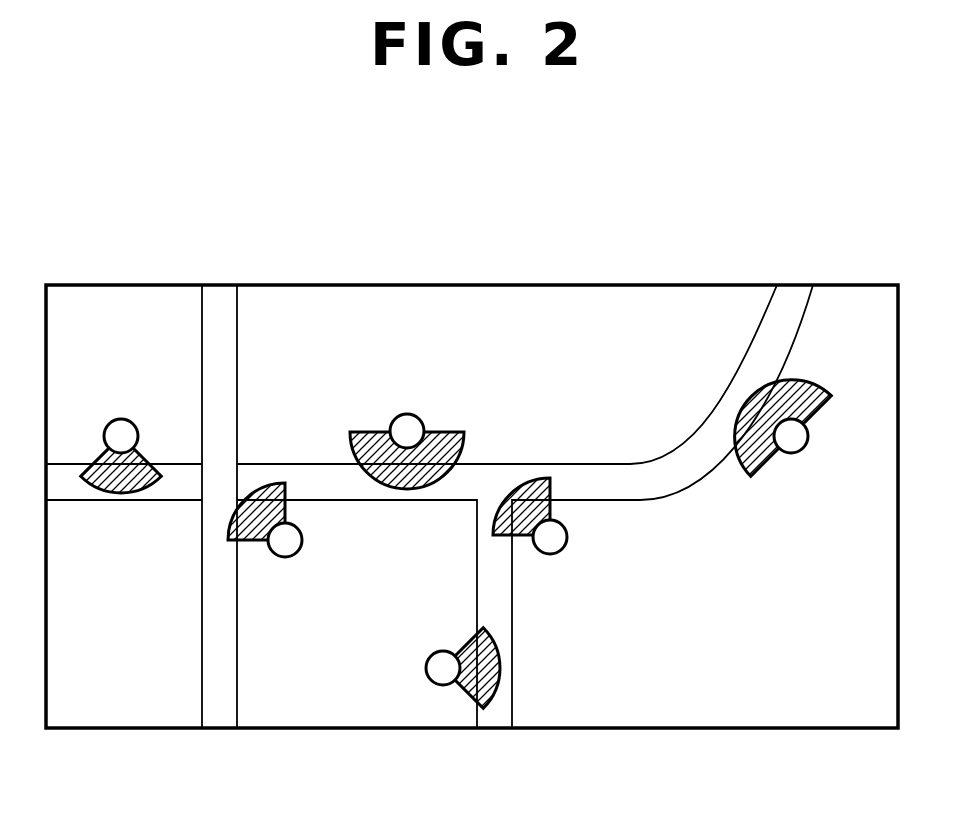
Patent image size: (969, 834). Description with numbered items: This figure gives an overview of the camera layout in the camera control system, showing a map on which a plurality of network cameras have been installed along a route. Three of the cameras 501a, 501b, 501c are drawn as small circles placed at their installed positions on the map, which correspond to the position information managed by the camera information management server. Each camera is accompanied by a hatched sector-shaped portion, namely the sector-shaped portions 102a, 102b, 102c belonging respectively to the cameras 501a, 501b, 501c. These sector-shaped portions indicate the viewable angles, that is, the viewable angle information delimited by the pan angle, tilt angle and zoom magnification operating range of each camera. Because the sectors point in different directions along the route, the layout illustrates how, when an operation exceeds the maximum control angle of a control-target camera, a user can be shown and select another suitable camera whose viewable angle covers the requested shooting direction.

The sector-shaped portion 102a is at (440, 432).
The sector-shaped portion 102b is at (552, 490).
The sector-shaped portion 102c is at (470, 697).
The camera 501a is at (403, 415).
The camera 501b is at (567, 537).
The camera 501c is at (426, 668).